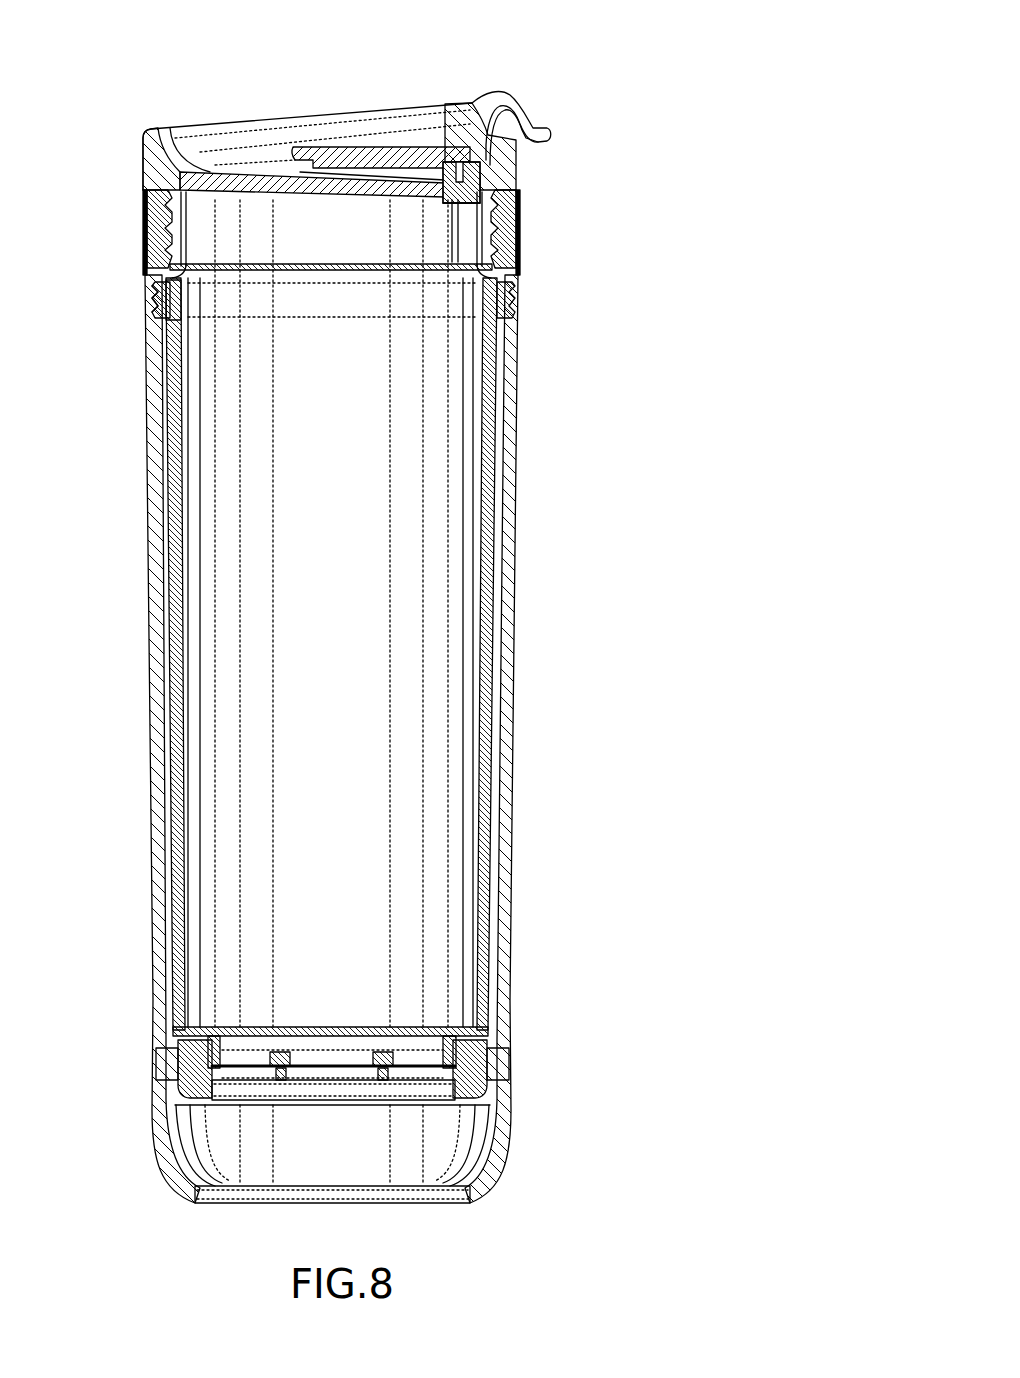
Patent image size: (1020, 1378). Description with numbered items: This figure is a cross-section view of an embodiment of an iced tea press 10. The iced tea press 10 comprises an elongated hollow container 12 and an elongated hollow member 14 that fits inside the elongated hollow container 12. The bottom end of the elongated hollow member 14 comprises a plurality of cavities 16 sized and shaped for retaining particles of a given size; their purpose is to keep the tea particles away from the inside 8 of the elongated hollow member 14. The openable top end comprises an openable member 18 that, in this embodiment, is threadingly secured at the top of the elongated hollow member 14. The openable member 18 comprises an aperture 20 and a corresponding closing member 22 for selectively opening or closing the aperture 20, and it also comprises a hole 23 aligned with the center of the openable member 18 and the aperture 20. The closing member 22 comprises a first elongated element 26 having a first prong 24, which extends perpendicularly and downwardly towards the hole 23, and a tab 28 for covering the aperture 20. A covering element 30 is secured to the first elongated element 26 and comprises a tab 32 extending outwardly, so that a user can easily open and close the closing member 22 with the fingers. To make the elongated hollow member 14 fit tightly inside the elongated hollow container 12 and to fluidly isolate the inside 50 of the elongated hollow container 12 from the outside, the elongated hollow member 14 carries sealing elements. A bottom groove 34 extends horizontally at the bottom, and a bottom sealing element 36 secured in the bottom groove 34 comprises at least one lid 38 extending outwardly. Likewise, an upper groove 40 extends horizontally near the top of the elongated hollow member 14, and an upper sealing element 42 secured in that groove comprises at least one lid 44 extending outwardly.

The inside of the elongated hollow member 8 is at (235, 757).
The iced tea press 10 is at (746, 194).
The elongated hollow container 12 is at (150, 632).
The elongated hollow member 14 is at (495, 622).
The cavities 16 is at (315, 1060).
The openable member 18 is at (152, 126).
The aperture 20 is at (472, 214).
The closing member 22 is at (364, 130).
The hole 23 is at (354, 206).
The first prong 24 is at (348, 188).
The first elongated element 26 is at (350, 185).
The tab 28 is at (450, 203).
The covering element 30 is at (410, 150).
The tab 32 is at (548, 128).
The bottom groove 34 is at (470, 1088).
The bottom sealing element 36 is at (492, 1068).
The lid 38 is at (490, 1060).
The upper groove 40 is at (160, 285).
The upper sealing element 42 is at (165, 305).
The lid 44 is at (158, 303).
The inside of the elongated hollow container 50 is at (455, 1150).